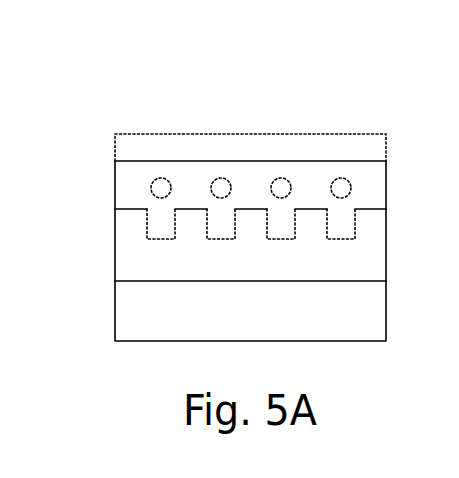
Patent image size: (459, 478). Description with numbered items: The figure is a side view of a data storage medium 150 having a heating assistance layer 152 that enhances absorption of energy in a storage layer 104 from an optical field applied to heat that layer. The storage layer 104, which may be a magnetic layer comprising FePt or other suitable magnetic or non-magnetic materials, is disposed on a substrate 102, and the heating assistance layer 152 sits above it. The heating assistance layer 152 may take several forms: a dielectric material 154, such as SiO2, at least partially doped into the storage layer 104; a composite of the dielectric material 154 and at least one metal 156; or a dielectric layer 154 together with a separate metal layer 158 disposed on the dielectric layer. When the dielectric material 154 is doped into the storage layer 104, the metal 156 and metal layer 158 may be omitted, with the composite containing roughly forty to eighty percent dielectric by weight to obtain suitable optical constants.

The data storage medium 150 is at (241, 94).
The substrate 102 is at (247, 321).
The storage layer 104 is at (142, 258).
The heating assistance layer 152 is at (108, 135).
The dielectric material 154 is at (368, 192).
The metal 156 is at (342, 187).
The metal layer 158 is at (188, 144).